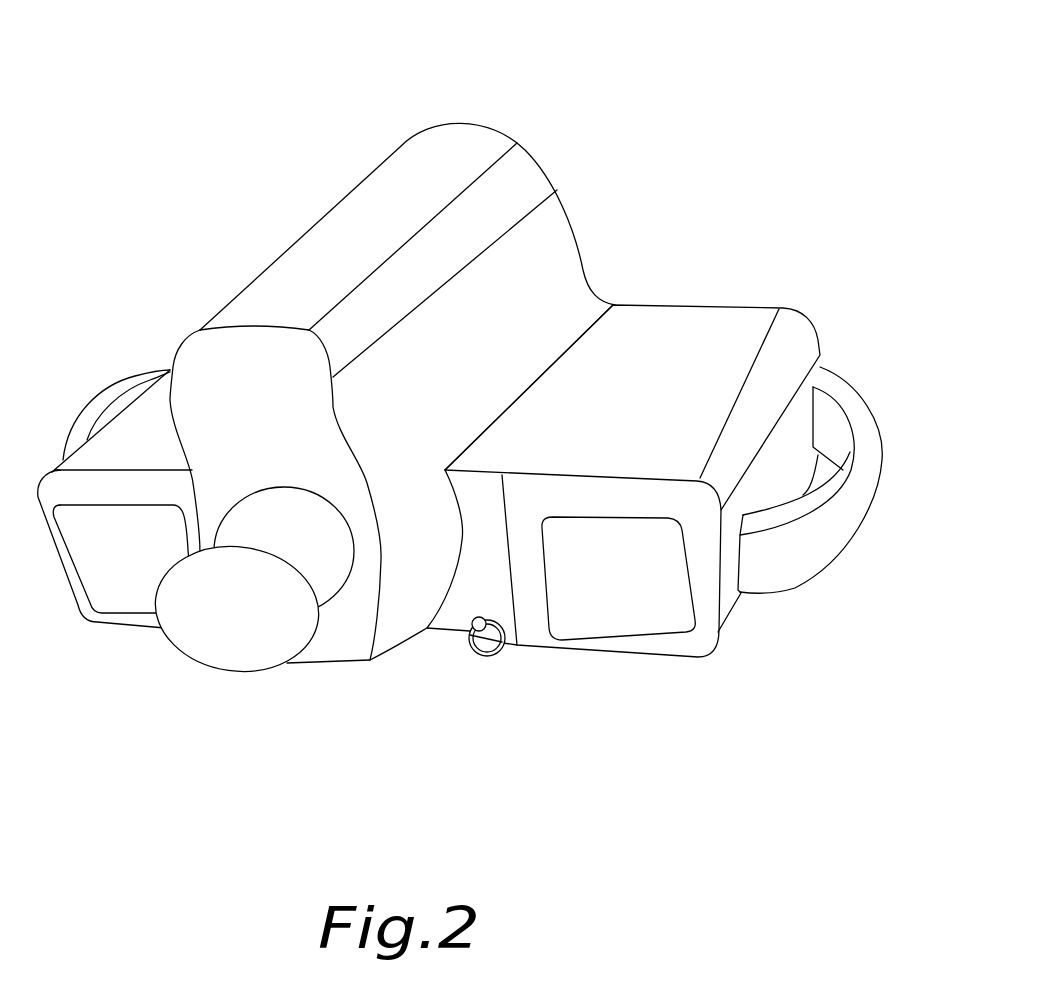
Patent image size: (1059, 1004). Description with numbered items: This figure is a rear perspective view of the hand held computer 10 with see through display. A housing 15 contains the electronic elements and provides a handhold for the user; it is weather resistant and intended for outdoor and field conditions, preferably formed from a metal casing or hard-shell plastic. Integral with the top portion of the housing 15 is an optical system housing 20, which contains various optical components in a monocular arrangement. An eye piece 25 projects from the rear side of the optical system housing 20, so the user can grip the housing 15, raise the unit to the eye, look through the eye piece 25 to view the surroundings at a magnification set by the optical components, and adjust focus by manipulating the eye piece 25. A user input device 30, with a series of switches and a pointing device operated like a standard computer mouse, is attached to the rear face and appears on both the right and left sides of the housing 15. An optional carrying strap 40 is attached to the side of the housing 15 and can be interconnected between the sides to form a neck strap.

The hand held computer 10 is at (765, 138).
The housing 15 is at (715, 317).
The optical system housing 20 is at (466, 135).
The eye piece 25 is at (293, 638).
The user input device 30 is at (123, 593).
The carrying strap 40 is at (845, 525).